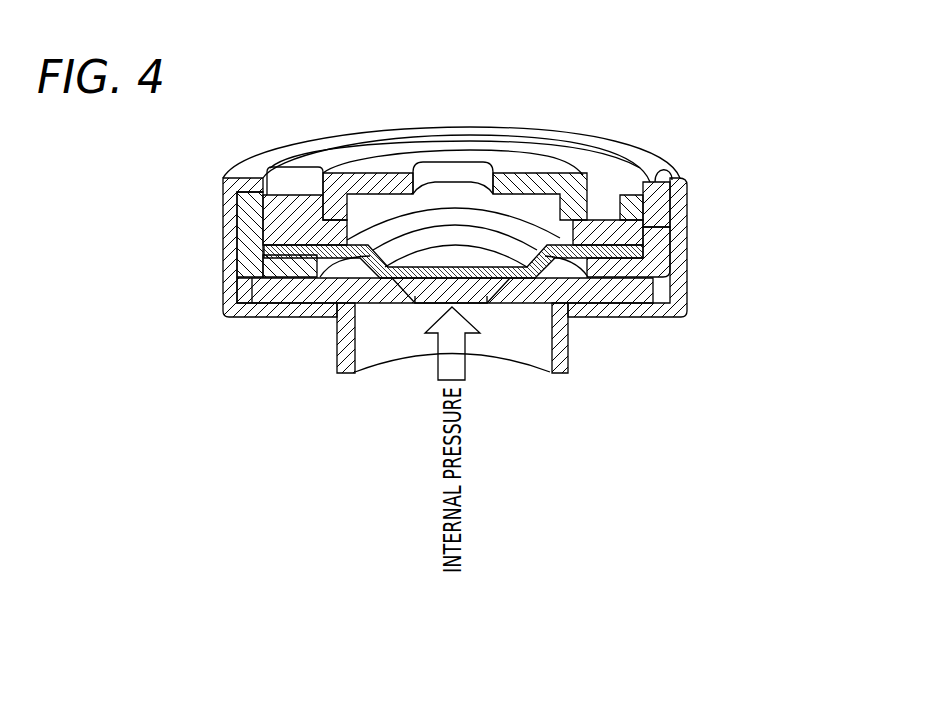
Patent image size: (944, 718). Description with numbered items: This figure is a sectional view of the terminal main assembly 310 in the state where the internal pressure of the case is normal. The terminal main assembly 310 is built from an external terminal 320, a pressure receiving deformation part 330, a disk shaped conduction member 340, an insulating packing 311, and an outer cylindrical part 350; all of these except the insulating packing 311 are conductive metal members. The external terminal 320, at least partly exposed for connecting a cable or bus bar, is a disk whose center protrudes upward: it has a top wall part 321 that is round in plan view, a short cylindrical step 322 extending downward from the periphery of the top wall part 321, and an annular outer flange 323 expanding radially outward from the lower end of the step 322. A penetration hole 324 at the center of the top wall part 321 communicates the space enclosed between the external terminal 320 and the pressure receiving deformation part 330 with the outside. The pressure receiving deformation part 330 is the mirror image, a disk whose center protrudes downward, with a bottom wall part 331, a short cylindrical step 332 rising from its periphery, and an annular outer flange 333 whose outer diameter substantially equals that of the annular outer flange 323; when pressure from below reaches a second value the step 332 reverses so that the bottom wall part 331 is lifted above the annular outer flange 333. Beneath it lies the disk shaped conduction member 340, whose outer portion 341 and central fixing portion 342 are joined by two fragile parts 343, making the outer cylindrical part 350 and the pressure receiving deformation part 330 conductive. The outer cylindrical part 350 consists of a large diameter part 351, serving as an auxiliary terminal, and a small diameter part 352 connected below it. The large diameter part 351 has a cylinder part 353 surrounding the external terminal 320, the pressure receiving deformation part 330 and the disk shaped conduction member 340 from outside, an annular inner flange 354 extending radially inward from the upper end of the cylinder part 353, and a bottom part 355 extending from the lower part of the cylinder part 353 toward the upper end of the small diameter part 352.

The terminal main assembly 310 is at (588, 107).
The insulating packing 311 is at (223, 214).
The external terminal 320 is at (433, 144).
The top wall part 321 is at (388, 132).
The short cylindrical step 322 is at (294, 186).
The annular outer flange 323 is at (305, 222).
The penetration hole 324 is at (460, 173).
The pressure receiving deformation part 330 is at (444, 339).
The bottom wall part 331 is at (392, 258).
The short cylindrical step 332 is at (323, 277).
The annular outer flange 333 is at (312, 263).
The disk shaped conduction member 340 is at (390, 379).
The outer portion 341 is at (613, 305).
The central fixing portion 342 is at (503, 291).
The fragile parts 343 is at (400, 294).
The outer cylindrical part 350 is at (599, 268).
The large diameter part 351 is at (701, 240).
The small diameter part 352 is at (572, 363).
The cylinder part 353 is at (672, 233).
The annular inner flange 354 is at (670, 163).
The bottom part 355 is at (675, 272).